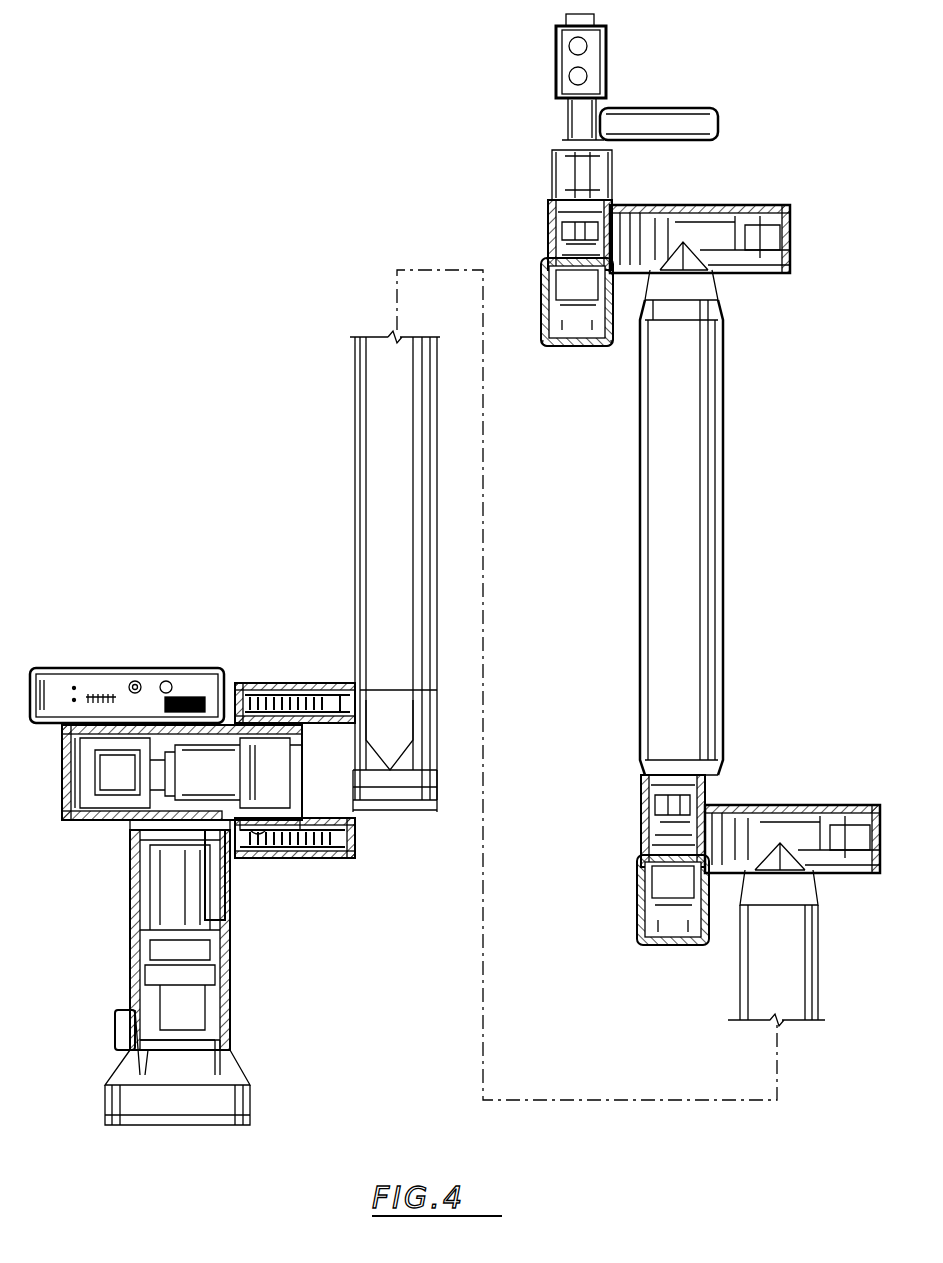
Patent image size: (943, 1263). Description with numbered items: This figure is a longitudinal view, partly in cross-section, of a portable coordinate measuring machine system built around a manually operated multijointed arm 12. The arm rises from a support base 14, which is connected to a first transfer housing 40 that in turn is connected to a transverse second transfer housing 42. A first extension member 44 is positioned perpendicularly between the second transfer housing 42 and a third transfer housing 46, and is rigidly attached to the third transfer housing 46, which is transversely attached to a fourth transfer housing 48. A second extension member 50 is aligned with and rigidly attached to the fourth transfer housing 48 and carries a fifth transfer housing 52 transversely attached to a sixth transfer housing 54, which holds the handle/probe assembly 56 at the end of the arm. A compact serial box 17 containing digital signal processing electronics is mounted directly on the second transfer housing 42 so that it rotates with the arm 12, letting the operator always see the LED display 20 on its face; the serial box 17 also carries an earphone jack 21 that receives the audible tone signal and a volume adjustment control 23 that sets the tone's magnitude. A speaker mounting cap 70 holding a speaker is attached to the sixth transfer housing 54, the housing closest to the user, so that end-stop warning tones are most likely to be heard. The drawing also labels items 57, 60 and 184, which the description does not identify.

The multijointed arm 12 is at (325, 228).
The base 14 is at (230, 1060).
The serial box 17 is at (150, 668).
The LED display 20 is at (100, 690).
The earphone jack 21 is at (135, 680).
The volume adjustment control 23 is at (166, 680).
The first transfer housing 40 is at (132, 915).
The second transfer housing 42 is at (130, 818).
The first extension member 44 is at (740, 992).
The third transfer housing 46 is at (782, 805).
The fourth transfer housing 48 is at (640, 835).
The second extension member 50 is at (640, 485).
The fifth transfer housing 52 is at (737, 205).
The sixth transfer housing 54 is at (550, 268).
The handle/probe assembly 56 is at (605, 52).
The handle 57 is at (670, 110).
The spring housing 60 is at (264, 683).
The speaker mounting cap 70 is at (560, 347).
The motor housing 184 is at (60, 812).